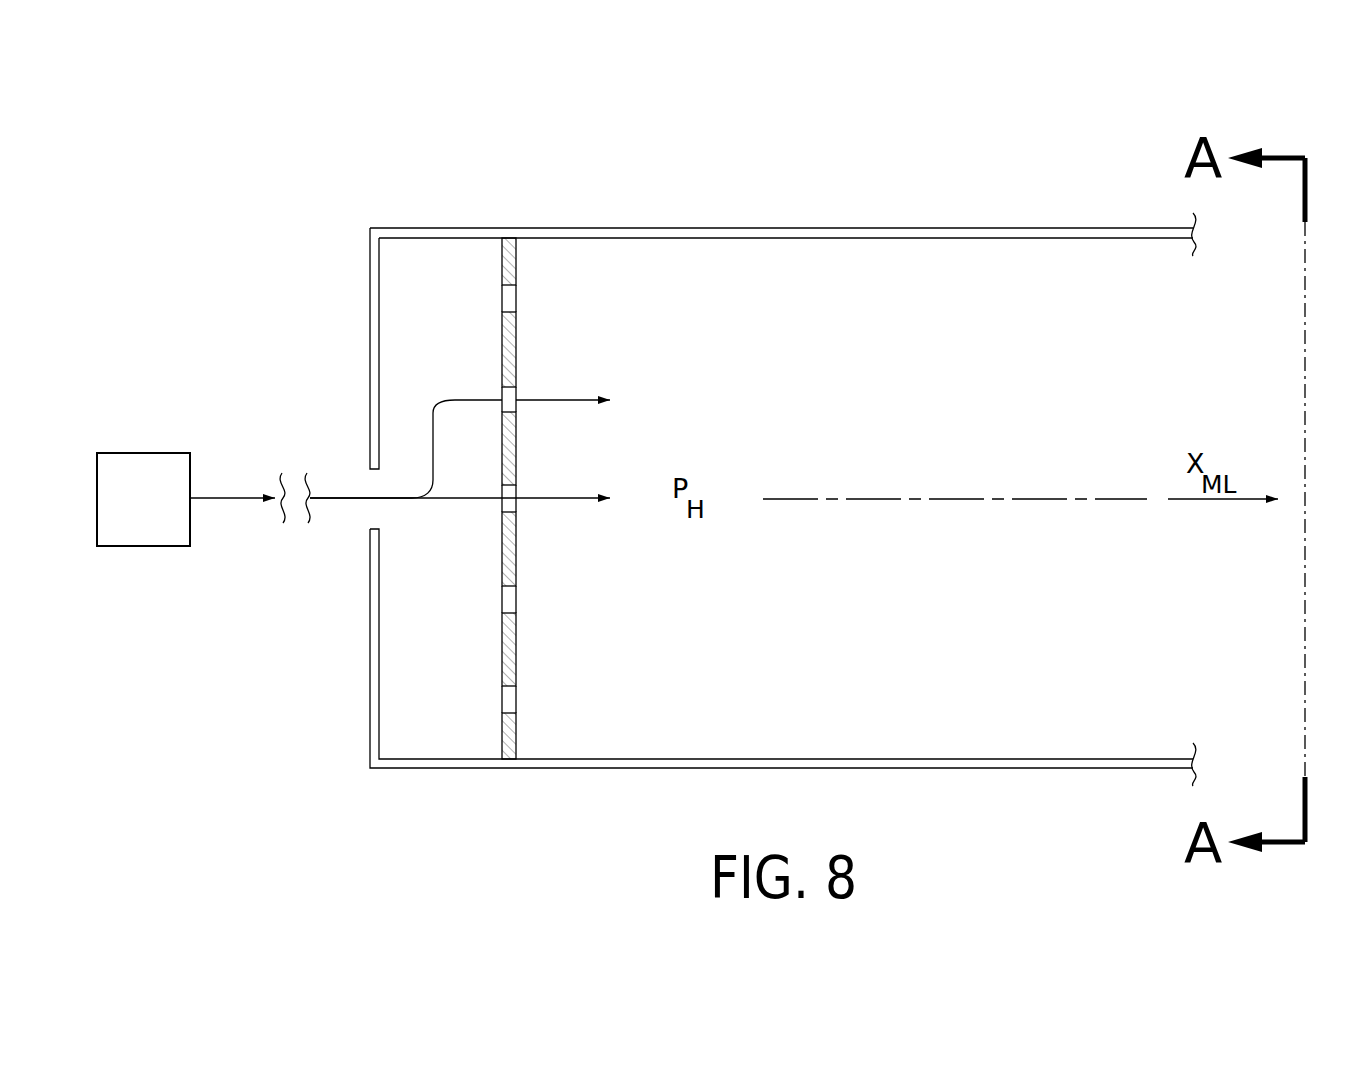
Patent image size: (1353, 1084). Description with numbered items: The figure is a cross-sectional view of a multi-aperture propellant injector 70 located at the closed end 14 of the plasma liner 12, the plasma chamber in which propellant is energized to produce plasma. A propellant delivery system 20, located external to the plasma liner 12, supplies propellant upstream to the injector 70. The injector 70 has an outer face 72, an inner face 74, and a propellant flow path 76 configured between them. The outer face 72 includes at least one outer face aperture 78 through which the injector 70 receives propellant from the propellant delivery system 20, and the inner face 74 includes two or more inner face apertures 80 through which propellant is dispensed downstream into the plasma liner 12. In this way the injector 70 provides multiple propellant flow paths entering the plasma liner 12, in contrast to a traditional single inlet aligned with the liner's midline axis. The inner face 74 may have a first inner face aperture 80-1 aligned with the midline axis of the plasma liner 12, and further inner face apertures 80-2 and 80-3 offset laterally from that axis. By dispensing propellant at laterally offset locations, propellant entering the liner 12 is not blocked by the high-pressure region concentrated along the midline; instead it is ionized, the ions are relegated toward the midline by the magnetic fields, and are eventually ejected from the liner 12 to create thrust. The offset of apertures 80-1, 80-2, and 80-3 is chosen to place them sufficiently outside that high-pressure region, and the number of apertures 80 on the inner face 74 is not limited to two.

The plasma liner 12 is at (861, 228).
The closed end 14 is at (559, 436).
The propellant delivery system 20 is at (130, 453).
The propellant injector 70 is at (747, 441).
The outer face 72 is at (370, 642).
The inner face 74 is at (518, 650).
The propellant flow path 76 is at (456, 359).
The outer face aperture 78 is at (377, 484).
The inner face apertures 80 is at (516, 298).
The first inner face aperture 80-1 is at (516, 495).
The second inner face aperture 80-2 is at (516, 397).
The lower hole 80-3 is at (516, 598).